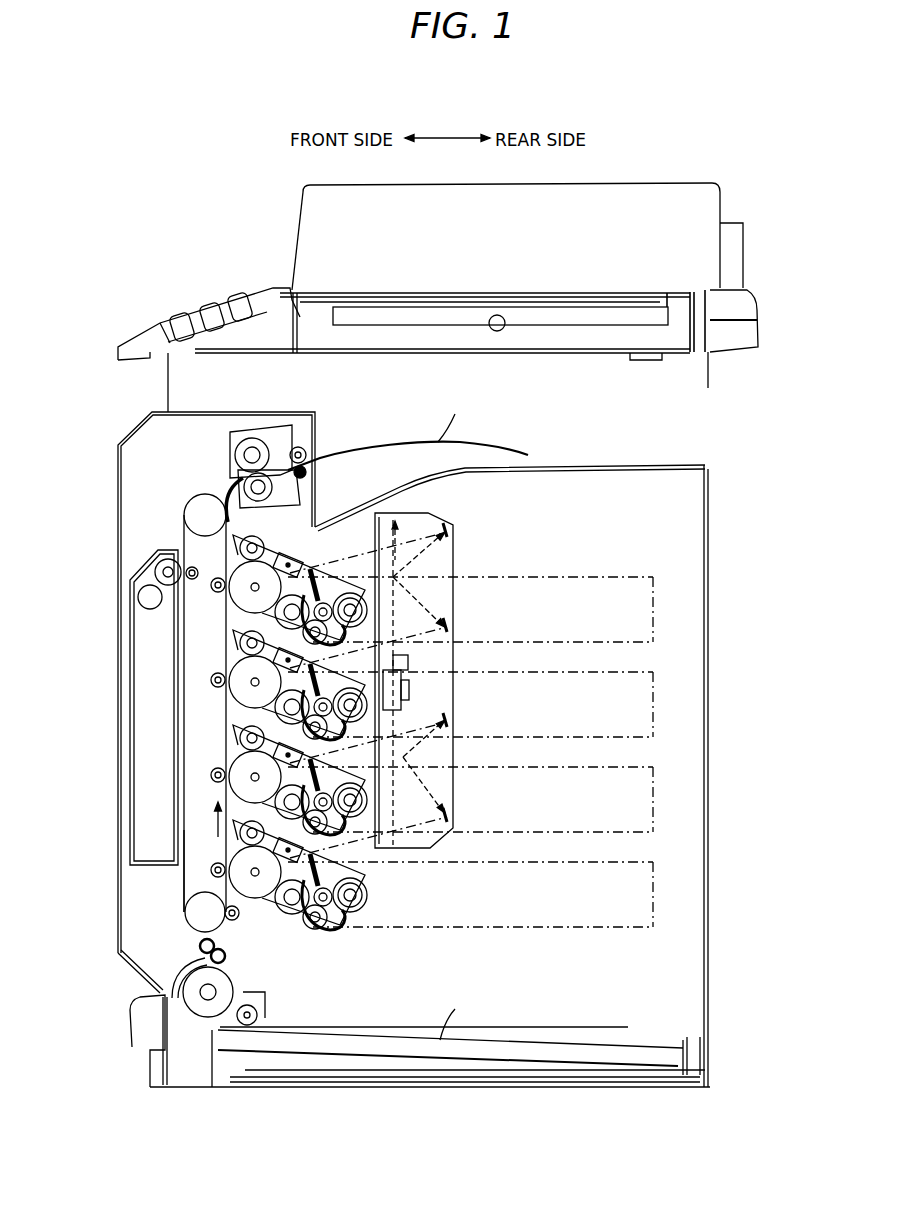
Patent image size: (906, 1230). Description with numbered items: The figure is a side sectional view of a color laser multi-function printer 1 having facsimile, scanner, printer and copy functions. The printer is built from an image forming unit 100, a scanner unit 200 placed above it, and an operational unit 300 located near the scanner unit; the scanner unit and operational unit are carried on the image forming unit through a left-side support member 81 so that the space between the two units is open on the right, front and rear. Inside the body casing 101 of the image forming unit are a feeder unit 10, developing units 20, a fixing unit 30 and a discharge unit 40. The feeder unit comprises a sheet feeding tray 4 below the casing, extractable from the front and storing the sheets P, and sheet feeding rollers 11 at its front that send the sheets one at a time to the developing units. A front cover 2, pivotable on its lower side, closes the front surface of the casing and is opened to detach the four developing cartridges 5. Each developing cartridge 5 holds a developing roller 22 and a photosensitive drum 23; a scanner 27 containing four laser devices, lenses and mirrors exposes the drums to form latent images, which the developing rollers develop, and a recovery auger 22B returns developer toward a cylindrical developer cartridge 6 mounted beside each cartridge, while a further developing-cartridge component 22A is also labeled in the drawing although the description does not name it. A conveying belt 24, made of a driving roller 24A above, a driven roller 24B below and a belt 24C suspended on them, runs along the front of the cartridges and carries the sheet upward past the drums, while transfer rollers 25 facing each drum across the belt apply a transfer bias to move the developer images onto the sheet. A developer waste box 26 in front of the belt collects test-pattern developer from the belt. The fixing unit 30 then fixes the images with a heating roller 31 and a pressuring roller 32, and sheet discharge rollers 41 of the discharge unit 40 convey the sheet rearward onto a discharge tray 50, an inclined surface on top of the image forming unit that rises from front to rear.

The multi-function printer 1 is at (643, 141).
The front cover 2 is at (124, 441).
The sheet feeding tray 4 is at (132, 1020).
The developing cartridge 5 is at (345, 568).
The developer cartridge 6 is at (655, 640).
The feeder unit 10 is at (289, 996).
The sheet feeding rollers 11 is at (229, 974).
The developing units 20 is at (362, 923).
The developing roller 22 is at (292, 915).
The developer housing 22A is at (336, 921).
The recovery auger 22B is at (362, 879).
The photosensitive drum 23 is at (258, 899).
The conveying belt 24 is at (172, 908).
The driving roller 24A is at (190, 512).
The driven roller 24B is at (193, 923).
The belt 24C is at (182, 882).
The transfer roller 25 is at (215, 579).
The developer waste box 26 is at (143, 567).
The scanner 27 is at (465, 553).
The fixing unit 30 is at (216, 437).
The heating roller 31 is at (244, 485).
The pressuring roller 32 is at (236, 458).
The discharge unit 40 is at (300, 397).
The sheet discharge rollers 41 is at (306, 450).
The discharge tray 50 is at (598, 464).
The left-side support member 81 is at (708, 388).
The image forming unit 100 is at (764, 400).
The body casing 101 is at (713, 687).
The scanner unit 200 is at (762, 168).
The operational unit 300 is at (196, 292).